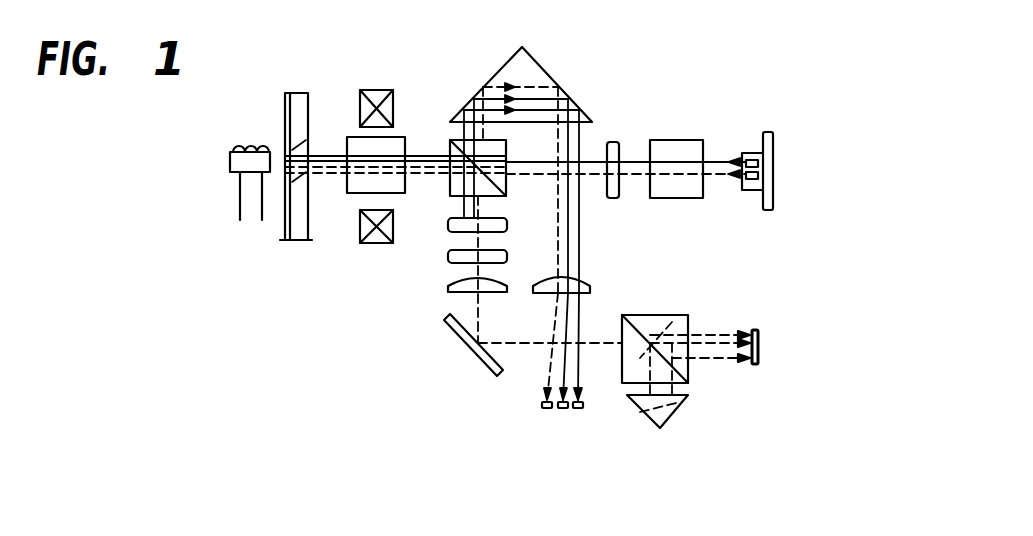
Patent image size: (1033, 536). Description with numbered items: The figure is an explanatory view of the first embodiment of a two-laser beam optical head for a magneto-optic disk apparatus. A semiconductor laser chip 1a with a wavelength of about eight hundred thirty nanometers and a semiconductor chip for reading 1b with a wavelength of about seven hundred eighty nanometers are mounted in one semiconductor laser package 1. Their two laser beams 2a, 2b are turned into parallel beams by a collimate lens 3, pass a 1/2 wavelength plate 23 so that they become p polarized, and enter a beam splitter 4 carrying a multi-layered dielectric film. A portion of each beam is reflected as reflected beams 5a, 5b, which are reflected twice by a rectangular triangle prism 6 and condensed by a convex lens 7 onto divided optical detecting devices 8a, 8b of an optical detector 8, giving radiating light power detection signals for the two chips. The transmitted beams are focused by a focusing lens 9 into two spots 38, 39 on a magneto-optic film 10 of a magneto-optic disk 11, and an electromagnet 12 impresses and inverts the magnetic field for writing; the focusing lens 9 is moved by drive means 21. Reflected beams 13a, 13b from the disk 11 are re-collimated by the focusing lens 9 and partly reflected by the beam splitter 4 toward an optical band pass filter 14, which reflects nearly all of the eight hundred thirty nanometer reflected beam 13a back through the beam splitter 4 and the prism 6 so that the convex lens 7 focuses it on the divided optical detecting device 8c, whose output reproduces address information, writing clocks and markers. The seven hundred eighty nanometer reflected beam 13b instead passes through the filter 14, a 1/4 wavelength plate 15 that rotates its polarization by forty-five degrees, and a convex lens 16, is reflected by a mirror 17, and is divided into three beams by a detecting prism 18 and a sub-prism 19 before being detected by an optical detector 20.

The semiconductor laser package 1 is at (768, 131).
The semiconductor laser chip 1a is at (773, 162).
The semiconductor chip for reading 1b is at (773, 178).
The laser beam 2a is at (720, 160).
The laser beam 2b is at (720, 176).
The collimate lens 3 is at (680, 140).
The beam splitter 4 is at (450, 140).
The reflected beam 5a is at (528, 99).
The reflected beam 5b is at (549, 86).
The rectangular triangle prism 6 is at (498, 72).
The convex lens 7 is at (590, 285).
The optical detector 8 is at (555, 430).
The divided optical detecting device 8a is at (563, 412).
The divided optical detecting device 8b is at (545, 412).
The divided optical detecting device 8c is at (580, 412).
The focusing lens 9 is at (355, 137).
The magneto-optic film 10 is at (284, 93).
The magneto-optic disk 11 is at (306, 238).
The electromagnet 12 is at (236, 175).
The reflected beam 13a is at (425, 155).
The reflected beam 13b is at (420, 176).
The optical band pass filter 14 is at (448, 227).
The 1/4 wavelength plate 15 is at (448, 258).
The convex lens 16 is at (448, 289).
The mirror 17 is at (470, 348).
The detecting prism 18 is at (673, 378).
The sub-prism 19 is at (677, 408).
The optical detector 20 is at (760, 344).
The drive means 21 is at (375, 244).
The 1/2 wavelength plate 23 is at (614, 142).
The spot 38 is at (296, 150).
The spot 39 is at (296, 180).